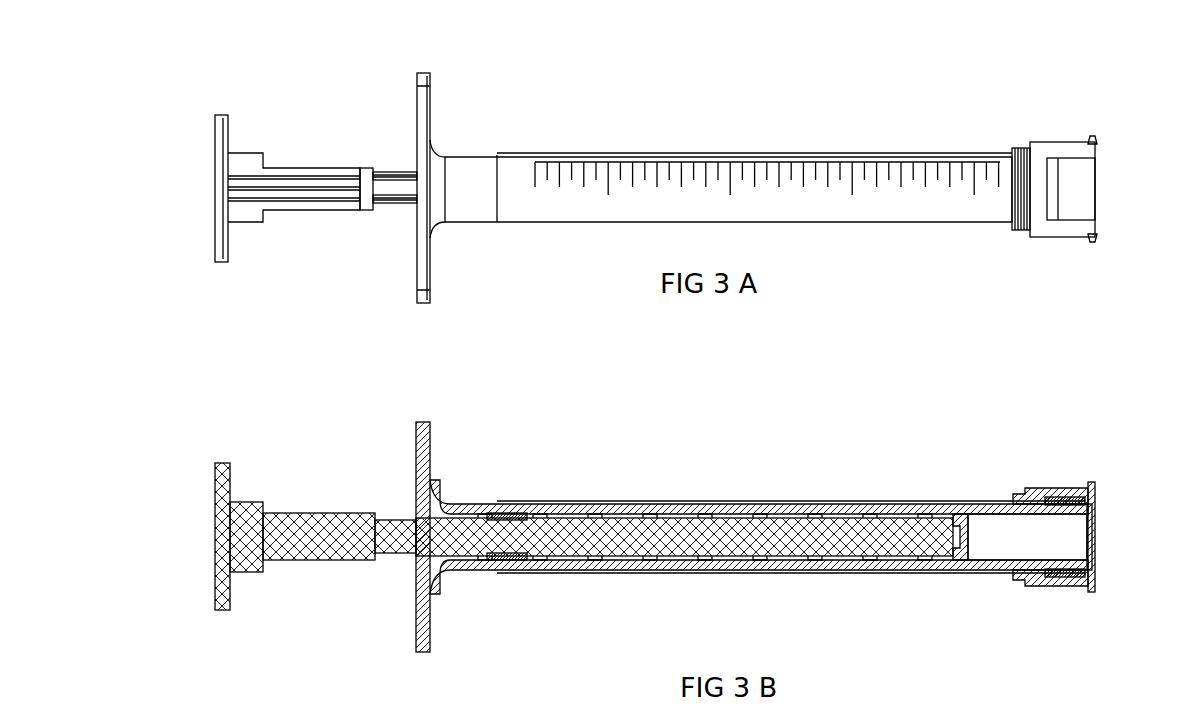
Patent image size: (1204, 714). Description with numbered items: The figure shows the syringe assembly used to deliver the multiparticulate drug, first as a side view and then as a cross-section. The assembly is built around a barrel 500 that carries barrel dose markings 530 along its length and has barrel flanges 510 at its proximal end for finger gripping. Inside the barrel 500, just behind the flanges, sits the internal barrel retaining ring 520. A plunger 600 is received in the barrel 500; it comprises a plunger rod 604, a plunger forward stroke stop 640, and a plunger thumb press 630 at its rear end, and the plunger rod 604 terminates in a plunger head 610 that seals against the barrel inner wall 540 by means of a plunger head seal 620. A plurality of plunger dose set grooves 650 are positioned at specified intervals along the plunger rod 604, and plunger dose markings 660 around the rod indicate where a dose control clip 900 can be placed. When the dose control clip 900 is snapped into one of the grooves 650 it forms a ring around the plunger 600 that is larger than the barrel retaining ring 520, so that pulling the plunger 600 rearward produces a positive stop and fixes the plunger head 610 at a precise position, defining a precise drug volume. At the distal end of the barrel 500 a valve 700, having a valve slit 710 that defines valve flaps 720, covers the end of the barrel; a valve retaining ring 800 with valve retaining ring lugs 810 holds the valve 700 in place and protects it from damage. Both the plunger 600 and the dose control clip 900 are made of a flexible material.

In FIG. 3A, the barrel 500 is at (730, 160).
In FIG. 3B, the barrel 500 is at (684, 503).
In FIG. 3A, the barrel flanges 510 is at (433, 278).
In FIG. 3B, the barrel retaining ring 520 is at (439, 500).
In FIG. 3A, the barrel dose markings 530 is at (850, 196).
In FIG. 3B, the barrel inner wall 540 is at (829, 503).
In FIG. 3A, the plunger 600 is at (278, 180).
In FIG. 3B, the plunger 600 is at (305, 525).
In FIG. 3B, the plunger rod 604 is at (408, 518).
In FIG. 3B, the plunger head 610 is at (942, 568).
In FIG. 3B, the plunger head seal 620 is at (1047, 580).
In FIG. 3B, the plunger thumb press 630 is at (232, 490).
In FIG. 3B, the plunger forward stroke stop 640 is at (249, 505).
In FIG. 3B, the plunger dose set grooves 650 is at (610, 558).
In FIG. 3A, the plunger dose markings 660 is at (418, 180).
In FIG. 3B, the valve 700 is at (1075, 497).
In FIG. 3B, the valve slit 710 is at (1097, 530).
In FIG. 3B, the valve flaps 720 is at (1095, 562).
In FIG. 3A, the valve retaining ring 800 is at (1045, 150).
In FIG. 3B, the valve retaining ring 800 is at (1035, 492).
In FIG. 3A, the valve retaining ring lugs 810 is at (1091, 140).
In FIG. 3B, the dose control clip 900 is at (515, 512).